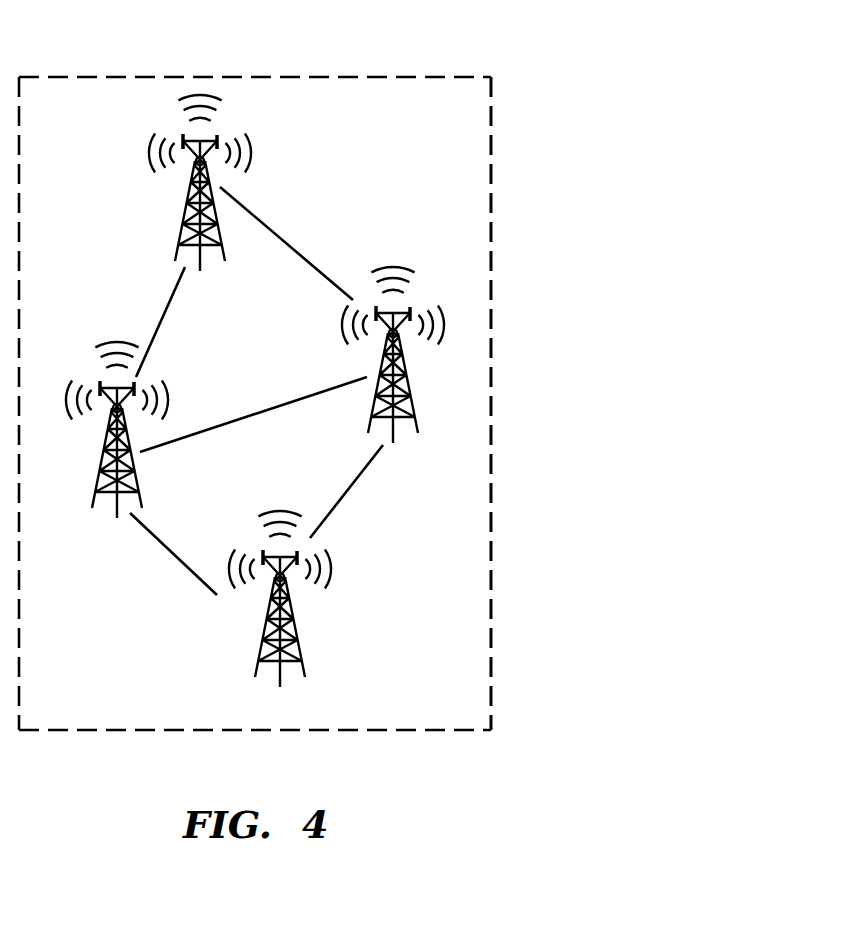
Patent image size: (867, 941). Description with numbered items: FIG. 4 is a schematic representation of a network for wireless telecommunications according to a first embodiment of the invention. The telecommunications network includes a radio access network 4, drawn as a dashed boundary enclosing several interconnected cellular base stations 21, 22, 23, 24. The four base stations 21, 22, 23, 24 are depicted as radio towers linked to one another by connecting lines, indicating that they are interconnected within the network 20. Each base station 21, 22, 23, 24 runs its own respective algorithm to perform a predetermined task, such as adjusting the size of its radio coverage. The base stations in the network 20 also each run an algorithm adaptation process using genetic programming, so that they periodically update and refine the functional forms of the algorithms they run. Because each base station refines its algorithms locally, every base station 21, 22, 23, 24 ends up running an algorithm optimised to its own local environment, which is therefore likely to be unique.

The network 20 is at (255, 76).
The radio access network 4 is at (483, 606).
The cellular base station 21 is at (408, 372).
The cellular base station 22 is at (186, 197).
The cellular base station 23 is at (101, 446).
The cellular base station 24 is at (262, 614).